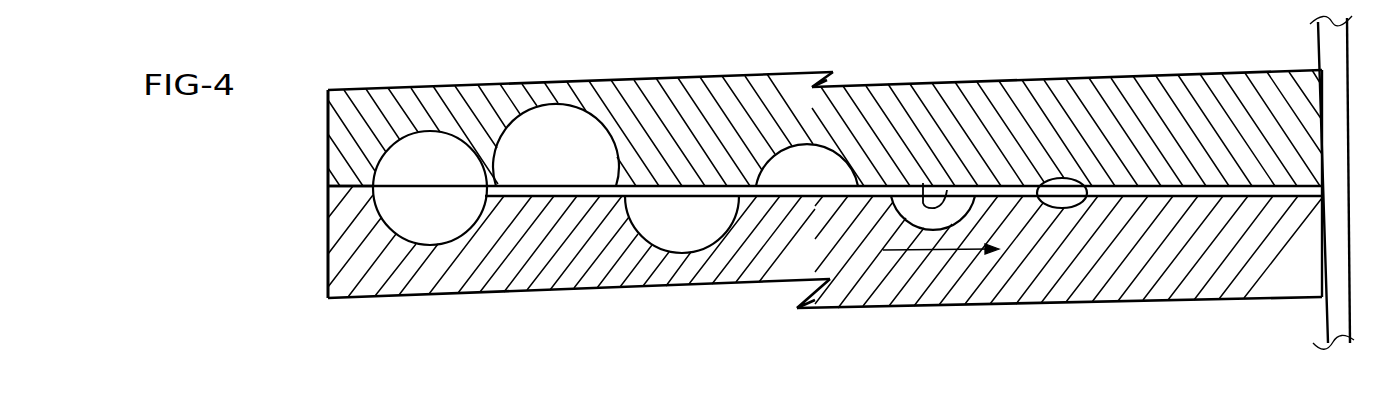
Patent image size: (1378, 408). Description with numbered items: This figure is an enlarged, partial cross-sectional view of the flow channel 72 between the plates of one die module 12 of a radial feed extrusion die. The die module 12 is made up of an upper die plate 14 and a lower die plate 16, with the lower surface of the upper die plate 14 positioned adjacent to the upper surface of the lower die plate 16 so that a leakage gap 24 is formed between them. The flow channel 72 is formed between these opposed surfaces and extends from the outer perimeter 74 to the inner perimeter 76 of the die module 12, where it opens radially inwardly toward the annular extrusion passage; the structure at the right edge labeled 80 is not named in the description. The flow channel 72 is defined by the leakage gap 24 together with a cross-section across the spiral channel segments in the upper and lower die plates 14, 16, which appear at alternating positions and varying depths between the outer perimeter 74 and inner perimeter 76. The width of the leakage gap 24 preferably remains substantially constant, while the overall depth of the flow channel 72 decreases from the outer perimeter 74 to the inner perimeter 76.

The die module 12 is at (868, 73).
The upper die plate 14 is at (657, 103).
The lower die plate 16 is at (405, 280).
The leakage gap 24 is at (947, 190).
The flow channel 72 is at (362, 174).
The outer perimeter 74 is at (316, 156).
The inner perimeter 76 is at (1306, 63).
The substrate / roll surface 80 is at (1345, 47).